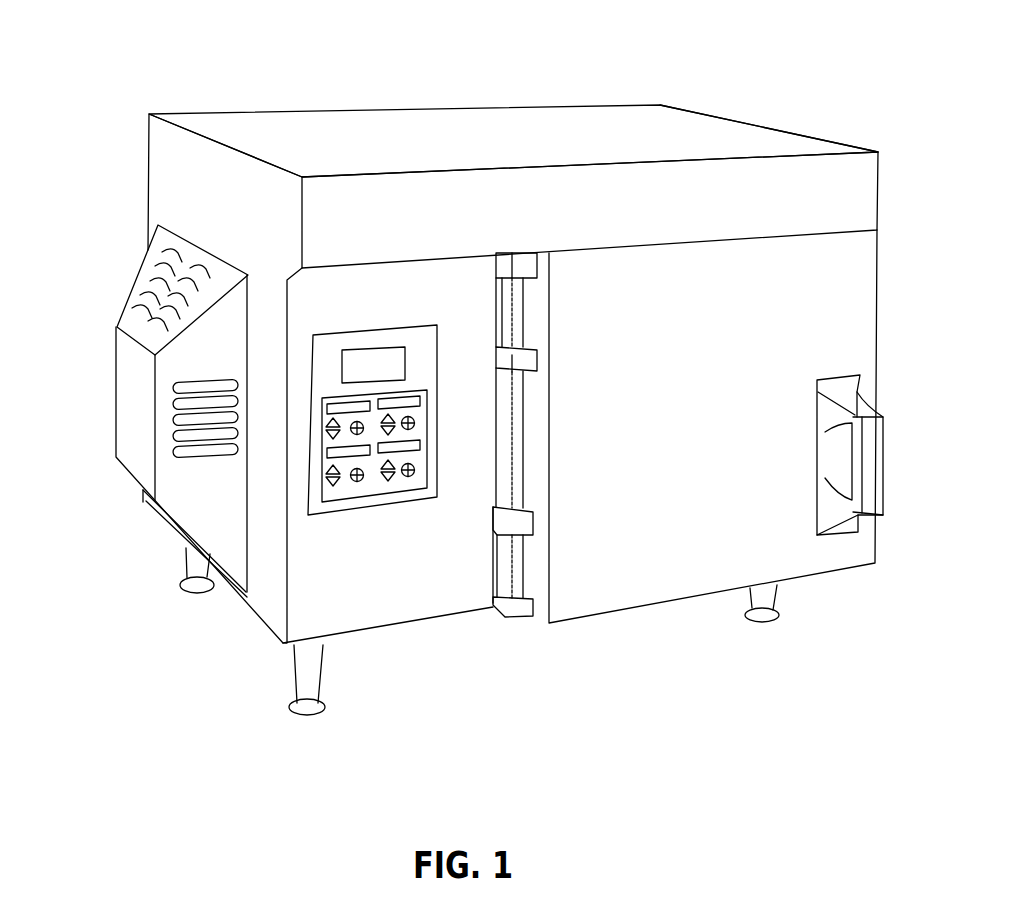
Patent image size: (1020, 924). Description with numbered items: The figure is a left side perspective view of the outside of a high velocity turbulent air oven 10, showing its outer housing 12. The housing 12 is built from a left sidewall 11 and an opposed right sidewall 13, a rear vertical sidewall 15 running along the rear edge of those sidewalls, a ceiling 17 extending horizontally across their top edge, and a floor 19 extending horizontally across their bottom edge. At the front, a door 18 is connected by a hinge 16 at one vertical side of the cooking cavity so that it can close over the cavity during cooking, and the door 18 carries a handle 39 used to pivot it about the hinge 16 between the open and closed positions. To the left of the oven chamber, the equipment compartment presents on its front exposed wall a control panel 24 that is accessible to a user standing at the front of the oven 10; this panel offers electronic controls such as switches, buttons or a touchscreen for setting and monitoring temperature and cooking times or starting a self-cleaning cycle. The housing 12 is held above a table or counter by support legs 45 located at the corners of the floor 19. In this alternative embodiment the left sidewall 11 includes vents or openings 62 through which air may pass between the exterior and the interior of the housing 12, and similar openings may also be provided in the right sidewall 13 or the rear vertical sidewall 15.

The high velocity turbulent air oven 10 is at (500, 408).
The left sidewall 11 is at (173, 162).
The housing 12 is at (128, 182).
The right sidewall 13 is at (835, 138).
The rear vertical sidewall 15 is at (392, 108).
The hinge 16 is at (523, 612).
The ceiling 17 is at (632, 152).
The door 18 is at (837, 325).
The floor 19 is at (418, 622).
The control panel 24 is at (425, 503).
The handle 39 is at (883, 462).
The support legs 45 is at (212, 597).
The vents or openings 62 is at (143, 278).